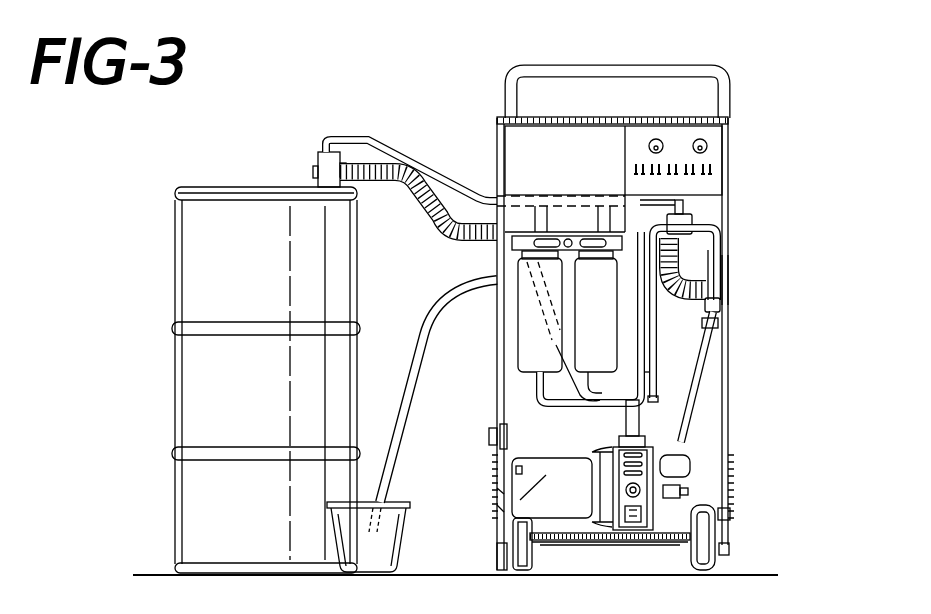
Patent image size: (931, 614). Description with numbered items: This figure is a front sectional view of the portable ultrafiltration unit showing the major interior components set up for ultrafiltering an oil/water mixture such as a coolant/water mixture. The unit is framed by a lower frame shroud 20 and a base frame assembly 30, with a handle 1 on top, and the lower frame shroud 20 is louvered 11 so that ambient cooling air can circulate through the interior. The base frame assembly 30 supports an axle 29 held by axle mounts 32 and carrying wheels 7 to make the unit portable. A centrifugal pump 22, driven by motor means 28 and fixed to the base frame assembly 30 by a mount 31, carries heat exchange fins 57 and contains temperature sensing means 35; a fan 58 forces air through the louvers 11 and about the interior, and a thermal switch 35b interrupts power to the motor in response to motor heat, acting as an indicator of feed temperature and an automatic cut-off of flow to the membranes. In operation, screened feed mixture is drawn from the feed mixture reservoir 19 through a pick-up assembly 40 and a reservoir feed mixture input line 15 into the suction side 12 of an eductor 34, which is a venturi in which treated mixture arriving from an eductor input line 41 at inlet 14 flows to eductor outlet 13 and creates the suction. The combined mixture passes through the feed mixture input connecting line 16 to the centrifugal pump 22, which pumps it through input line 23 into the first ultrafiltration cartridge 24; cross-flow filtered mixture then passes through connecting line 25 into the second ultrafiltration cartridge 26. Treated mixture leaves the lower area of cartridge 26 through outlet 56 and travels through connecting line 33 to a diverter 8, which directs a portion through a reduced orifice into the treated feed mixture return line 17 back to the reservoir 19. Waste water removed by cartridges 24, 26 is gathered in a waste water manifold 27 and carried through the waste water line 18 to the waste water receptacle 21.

The handle 1 is at (693, 68).
The wheels 7 is at (497, 560).
The diverter 8 is at (684, 228).
The louvers 11 is at (498, 470).
The suction side of eductor 12 is at (716, 312).
The eductor outlet 13 is at (718, 323).
The eductor inlet 14 is at (720, 256).
The reservoir feed mixture input line 15 is at (432, 174).
The feed mixture input connecting line 16 is at (688, 440).
The treated feed mixture return line 17 is at (350, 136).
The waste water line 18 is at (410, 336).
The feed mixture reservoir 19 is at (262, 283).
The lower frame shroud 20 is at (497, 340).
The waste water receptacle 21 is at (372, 563).
The centrifugal pump 22 is at (591, 455).
The input line 23 is at (650, 374).
The first ultrafiltration cartridge 24 is at (608, 362).
The connecting line 25 is at (658, 402).
The second ultrafiltration cartridge 26 is at (550, 362).
The waste water manifold 27 is at (568, 238).
The motor means 28 is at (498, 508).
The axle 29 is at (650, 543).
The base frame assembly 30 is at (578, 540).
The mount 31 is at (622, 522).
The axle mounts 32 is at (533, 557).
The connecting line 33 is at (658, 350).
The eductor 34 is at (728, 281).
The temperature sensing means 35 is at (688, 503).
The thermal switch 35b is at (498, 491).
The pick-up assembly 40 is at (318, 165).
The eductor input line 41 is at (714, 228).
The outlet 56 is at (535, 372).
The heat exchange fins 57 is at (730, 516).
The fan 58 is at (489, 434).